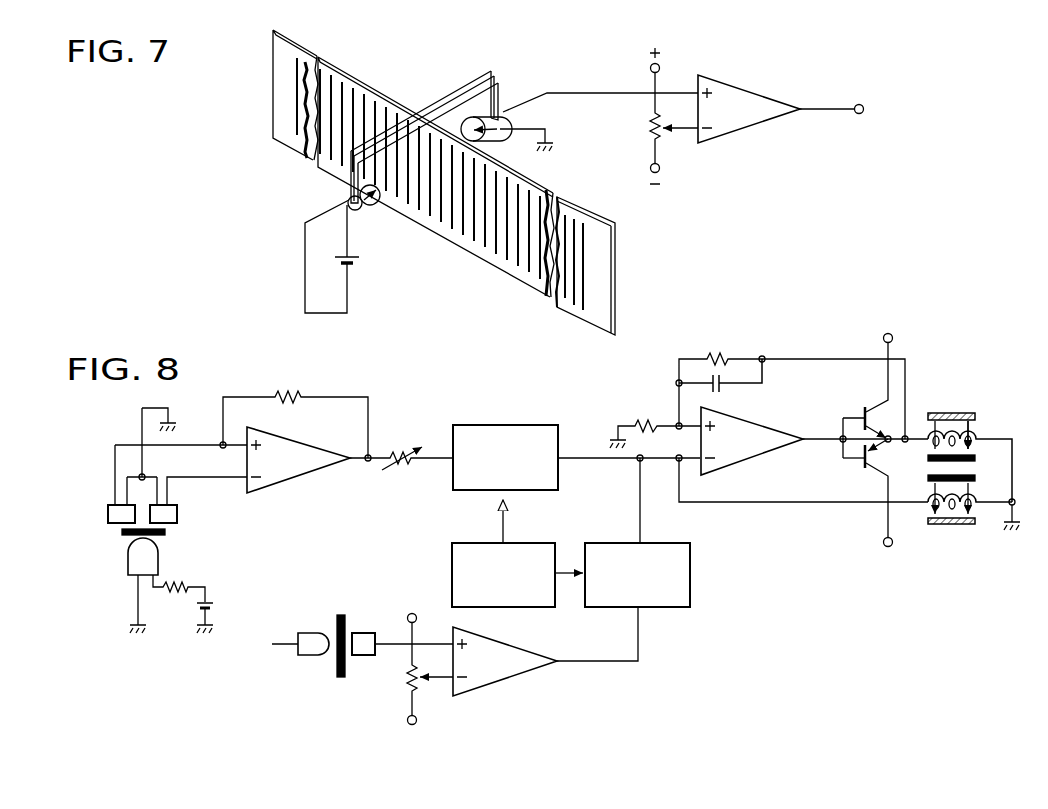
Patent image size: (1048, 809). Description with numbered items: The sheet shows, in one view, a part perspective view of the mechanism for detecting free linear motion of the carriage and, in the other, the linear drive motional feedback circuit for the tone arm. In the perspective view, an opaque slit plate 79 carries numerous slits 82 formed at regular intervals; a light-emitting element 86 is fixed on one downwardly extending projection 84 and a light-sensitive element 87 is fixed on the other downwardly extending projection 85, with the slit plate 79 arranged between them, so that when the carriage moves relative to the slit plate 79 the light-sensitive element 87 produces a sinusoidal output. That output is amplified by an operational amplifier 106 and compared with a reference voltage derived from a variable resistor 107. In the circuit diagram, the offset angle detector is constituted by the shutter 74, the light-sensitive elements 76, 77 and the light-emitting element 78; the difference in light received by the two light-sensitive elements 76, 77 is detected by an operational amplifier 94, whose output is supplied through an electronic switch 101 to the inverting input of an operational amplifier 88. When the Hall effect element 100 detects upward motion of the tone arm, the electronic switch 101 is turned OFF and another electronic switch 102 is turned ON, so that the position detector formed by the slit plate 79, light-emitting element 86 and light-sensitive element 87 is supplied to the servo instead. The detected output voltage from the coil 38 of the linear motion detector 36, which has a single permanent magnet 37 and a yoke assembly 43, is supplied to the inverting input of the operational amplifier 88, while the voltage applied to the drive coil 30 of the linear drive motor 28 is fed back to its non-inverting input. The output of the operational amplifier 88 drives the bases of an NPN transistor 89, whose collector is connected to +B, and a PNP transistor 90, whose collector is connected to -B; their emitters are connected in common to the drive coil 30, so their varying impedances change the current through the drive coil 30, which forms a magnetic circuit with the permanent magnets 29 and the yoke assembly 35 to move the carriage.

In FIG. 8, the linear drive motor 28 is at (982, 433).
In FIG. 8, the permanent magnets 29 is at (958, 412).
In FIG. 8, the drive coil 30 is at (977, 440).
In FIG. 8, the yoke assembly 35 is at (975, 457).
In FIG. 8, the linear motion detector 36 is at (982, 520).
In FIG. 8, the permanent magnet 37 is at (958, 525).
In FIG. 8, the coil 38 is at (1014, 504).
In FIG. 8, the yoke assembly 43 is at (975, 478).
In FIG. 8, the shutter 74 is at (168, 532).
In FIG. 8, the light-sensitive element 76 is at (108, 505).
In FIG. 8, the light-sensitive element 77 is at (170, 510).
In FIG. 8, the light-emitting element 78 is at (135, 552).
In FIG. 7, the slit plate 79 is at (537, 278).
In FIG. 8, the slit plate 79 is at (342, 615).
In FIG. 7, the slits 82 is at (507, 222).
In FIG. 7, the downwardly extending projection 84 is at (351, 175).
In FIG. 7, the downwardly extending projection 85 is at (500, 97).
In FIG. 7, the light-emitting element 86 is at (372, 207).
In FIG. 8, the light-emitting element 86 is at (310, 640).
In FIG. 7, the light-sensitive element 87 is at (503, 135).
In FIG. 8, the light-sensitive element 87 is at (363, 635).
In FIG. 8, the operational amplifier 88 is at (755, 428).
In FIG. 8, the NPN transistor 89 is at (876, 409).
In FIG. 8, the PNP transistor 90 is at (877, 468).
In FIG. 8, the operational amplifier 94 is at (312, 468).
In FIG. 8, the Hall effect element 100 is at (533, 547).
In FIG. 8, the electronic switch 101 is at (497, 431).
In FIG. 8, the electronic switch 102 is at (668, 550).
In FIG. 7, the operational amplifier 106 is at (740, 97).
In FIG. 8, the operational amplifier 106 is at (520, 655).
In FIG. 7, the variable resistor 107 is at (650, 122).
In FIG. 8, the variable resistor 107 is at (405, 675).